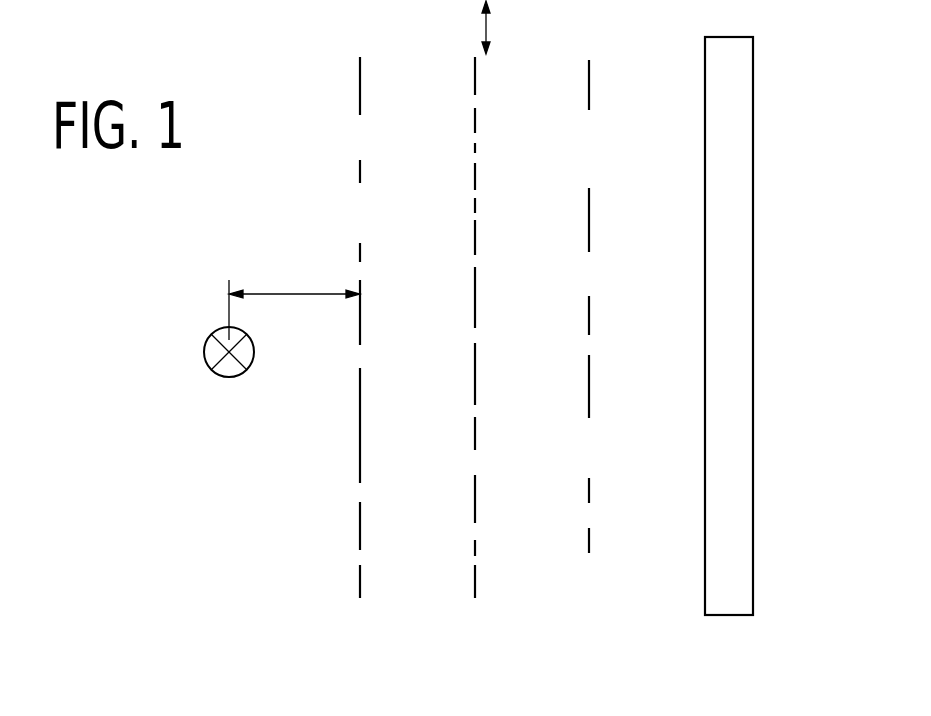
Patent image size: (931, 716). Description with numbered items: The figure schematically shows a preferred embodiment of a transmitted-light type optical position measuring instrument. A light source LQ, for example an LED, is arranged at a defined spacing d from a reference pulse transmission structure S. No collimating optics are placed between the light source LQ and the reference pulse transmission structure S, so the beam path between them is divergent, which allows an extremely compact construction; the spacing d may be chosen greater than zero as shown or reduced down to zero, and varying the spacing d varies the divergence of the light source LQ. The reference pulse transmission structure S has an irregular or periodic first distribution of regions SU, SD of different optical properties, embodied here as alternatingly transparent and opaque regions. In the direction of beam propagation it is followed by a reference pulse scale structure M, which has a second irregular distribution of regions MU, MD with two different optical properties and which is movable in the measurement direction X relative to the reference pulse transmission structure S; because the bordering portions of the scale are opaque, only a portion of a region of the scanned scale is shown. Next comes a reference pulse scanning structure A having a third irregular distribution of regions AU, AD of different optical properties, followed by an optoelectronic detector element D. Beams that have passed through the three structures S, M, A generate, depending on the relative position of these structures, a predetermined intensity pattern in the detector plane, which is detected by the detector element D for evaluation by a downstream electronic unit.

The reference pulse transmission structure S is at (350, 74).
The region of reference pulse transmission structure SD is at (360, 558).
The region of reference pulse transmission structure SU is at (360, 585).
The reference pulse scale structure M is at (462, 72).
The region of reference pulse scale structure MD is at (477, 558).
The region of reference pulse scale structure MU is at (475, 585).
The reference pulse scanning structure A is at (577, 83).
The region of reference pulse scanning structure AD is at (589, 513).
The region of reference pulse scanning structure AU is at (589, 545).
The measurement direction X is at (499, 27).
The optoelectronic detector element D is at (747, 555).
The light source LQ is at (223, 372).
The spacing d is at (294, 281).